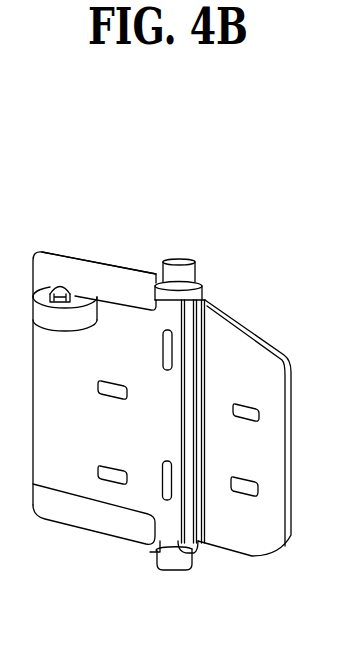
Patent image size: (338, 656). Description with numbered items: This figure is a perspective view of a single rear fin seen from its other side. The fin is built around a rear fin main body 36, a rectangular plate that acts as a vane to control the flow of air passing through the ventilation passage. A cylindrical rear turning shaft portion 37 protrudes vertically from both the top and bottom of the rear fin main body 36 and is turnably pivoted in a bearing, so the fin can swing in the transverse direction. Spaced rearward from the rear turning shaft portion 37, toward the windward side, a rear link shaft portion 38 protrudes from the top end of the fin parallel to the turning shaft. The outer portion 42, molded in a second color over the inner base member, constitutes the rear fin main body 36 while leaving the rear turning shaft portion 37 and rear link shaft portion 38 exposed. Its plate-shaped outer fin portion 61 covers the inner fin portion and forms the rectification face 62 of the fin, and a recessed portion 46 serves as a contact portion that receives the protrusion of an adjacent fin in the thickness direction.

The rear fin main body 36 is at (266, 353).
The rear turning shaft portion 37 is at (177, 259).
The rear link shaft portion 38 is at (57, 283).
The outer portion 42 is at (133, 282).
The recessed portion 46 is at (207, 348).
The outer fin portion 61 is at (118, 525).
The rectification face 62 is at (80, 445).